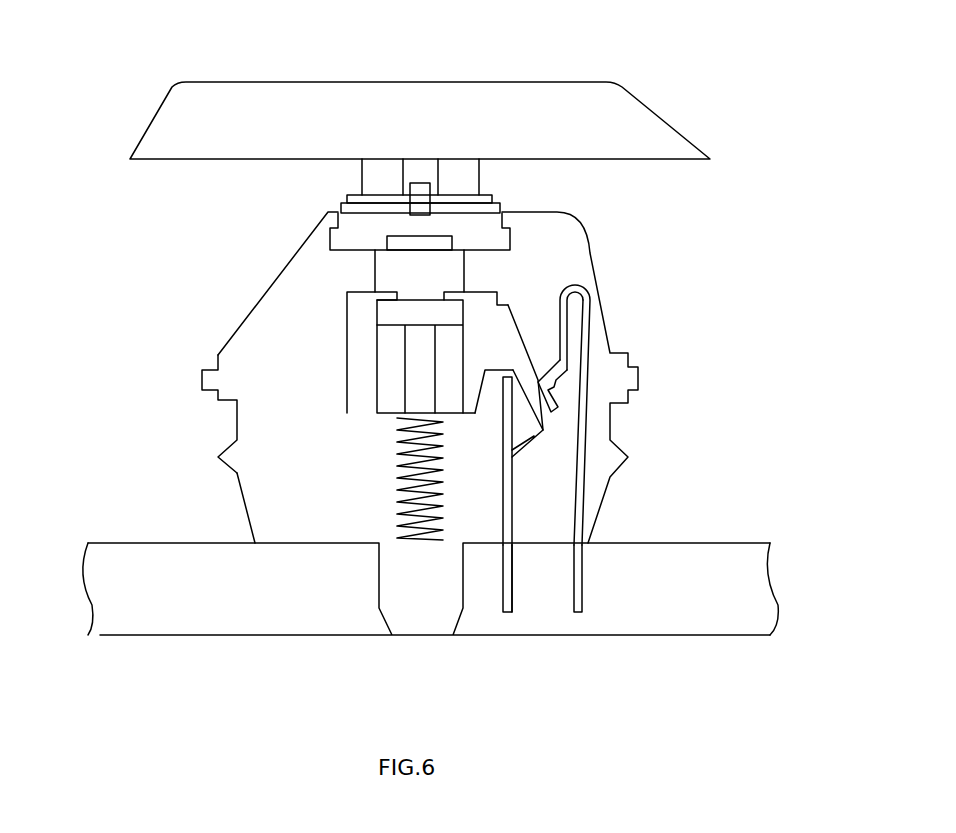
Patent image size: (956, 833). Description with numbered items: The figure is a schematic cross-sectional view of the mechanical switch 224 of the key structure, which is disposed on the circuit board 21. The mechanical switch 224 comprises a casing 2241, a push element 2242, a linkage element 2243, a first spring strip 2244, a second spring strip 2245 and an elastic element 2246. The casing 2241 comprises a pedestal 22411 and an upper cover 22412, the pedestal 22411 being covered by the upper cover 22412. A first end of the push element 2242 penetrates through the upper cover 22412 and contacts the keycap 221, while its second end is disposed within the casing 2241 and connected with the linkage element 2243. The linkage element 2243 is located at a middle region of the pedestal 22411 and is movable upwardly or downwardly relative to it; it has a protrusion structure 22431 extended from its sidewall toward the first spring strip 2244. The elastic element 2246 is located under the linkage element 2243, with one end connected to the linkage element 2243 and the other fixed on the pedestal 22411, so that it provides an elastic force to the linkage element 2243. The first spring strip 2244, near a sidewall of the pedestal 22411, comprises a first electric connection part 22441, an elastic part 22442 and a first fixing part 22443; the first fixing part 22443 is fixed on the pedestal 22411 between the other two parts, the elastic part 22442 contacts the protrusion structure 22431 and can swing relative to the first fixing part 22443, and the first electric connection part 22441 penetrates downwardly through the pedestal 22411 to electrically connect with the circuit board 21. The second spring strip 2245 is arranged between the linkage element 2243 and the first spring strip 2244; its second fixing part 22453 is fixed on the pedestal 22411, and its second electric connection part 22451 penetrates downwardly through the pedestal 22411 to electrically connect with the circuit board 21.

The circuit board 21 is at (185, 548).
The keycap 221 is at (515, 69).
The mechanical switch 224 is at (634, 233).
The casing 2241 is at (387, 377).
The pedestal 22411 is at (258, 522).
The upper cover 22412 is at (285, 294).
The push element 2242 is at (402, 272).
The linkage element 2243 is at (586, 359).
The protrusion structure 22431 is at (533, 388).
The first spring strip 2244 is at (634, 483).
The first electric connection part 22441 is at (583, 596).
The elastic part 22442 is at (548, 372).
The first fixing part 22443 is at (576, 550).
The second spring strip 2245 is at (473, 544).
The second electric connection part 22451 is at (503, 597).
The second fixing part 22453 is at (511, 547).
The elastic element 2246 is at (402, 492).